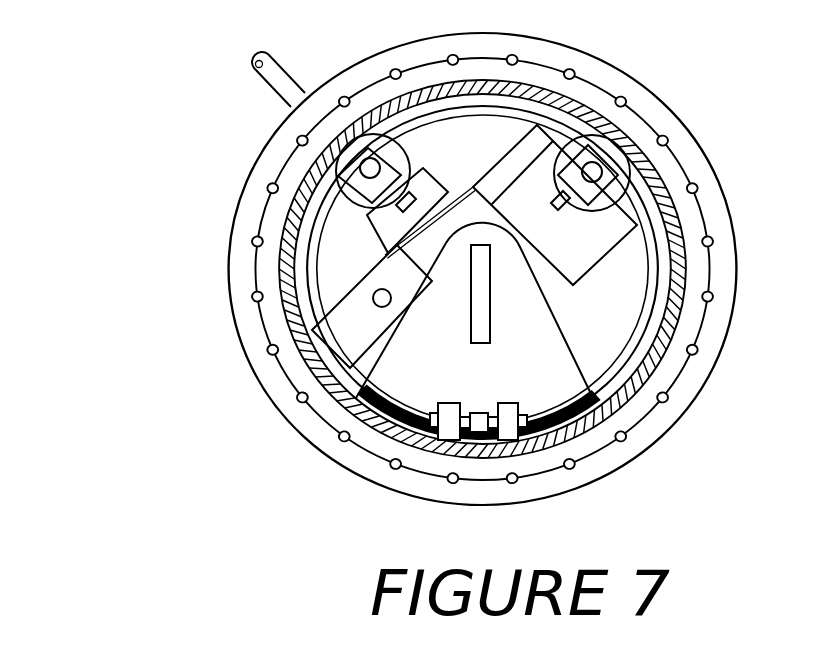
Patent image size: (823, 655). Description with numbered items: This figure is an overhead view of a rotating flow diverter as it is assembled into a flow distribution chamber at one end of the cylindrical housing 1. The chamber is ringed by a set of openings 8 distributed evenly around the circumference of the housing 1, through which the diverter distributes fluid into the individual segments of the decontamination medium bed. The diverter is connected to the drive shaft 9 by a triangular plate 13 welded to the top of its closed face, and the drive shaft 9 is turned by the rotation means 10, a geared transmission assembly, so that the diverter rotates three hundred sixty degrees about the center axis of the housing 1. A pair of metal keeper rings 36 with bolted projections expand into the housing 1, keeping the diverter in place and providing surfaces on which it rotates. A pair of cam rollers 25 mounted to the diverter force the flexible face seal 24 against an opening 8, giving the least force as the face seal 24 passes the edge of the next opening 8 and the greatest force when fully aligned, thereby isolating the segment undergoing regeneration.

The housing 1 is at (248, 162).
The openings 8 is at (385, 312).
The drive shaft 9 is at (424, 281).
The rotation means 10 is at (355, 280).
The triangular plate 13 is at (540, 378).
The face seal 24 is at (437, 450).
The cam rollers 25 is at (548, 195).
The keeper rings 36 is at (398, 434).